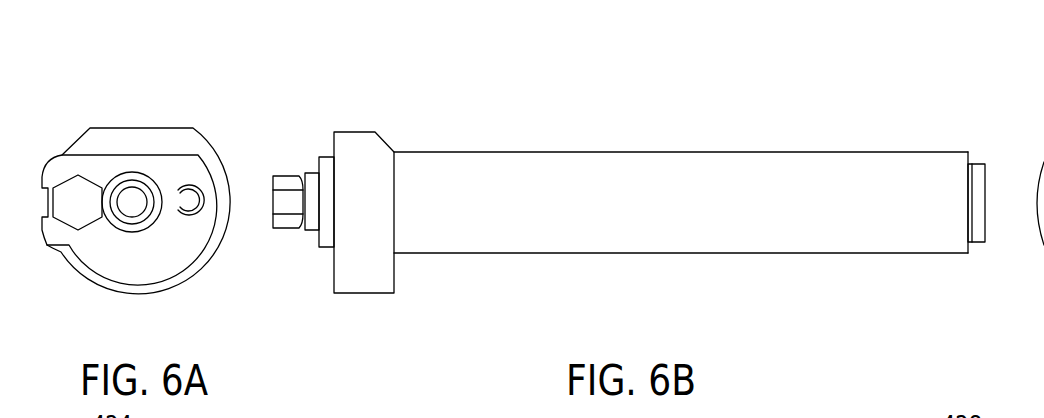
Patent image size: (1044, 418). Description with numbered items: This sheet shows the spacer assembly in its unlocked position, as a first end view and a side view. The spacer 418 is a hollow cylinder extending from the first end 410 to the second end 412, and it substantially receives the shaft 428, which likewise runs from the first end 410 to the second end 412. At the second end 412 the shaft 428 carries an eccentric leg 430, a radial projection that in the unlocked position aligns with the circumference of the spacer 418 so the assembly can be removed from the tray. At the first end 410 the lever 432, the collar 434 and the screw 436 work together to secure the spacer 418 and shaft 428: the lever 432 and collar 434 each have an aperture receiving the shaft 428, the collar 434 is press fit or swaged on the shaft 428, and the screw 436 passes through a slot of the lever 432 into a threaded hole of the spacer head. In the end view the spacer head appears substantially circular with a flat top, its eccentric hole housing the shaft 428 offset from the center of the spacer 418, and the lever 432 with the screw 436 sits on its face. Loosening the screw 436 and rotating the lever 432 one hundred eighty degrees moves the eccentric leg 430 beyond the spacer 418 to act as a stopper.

In FIG. 6B, the first end 410 is at (334, 152).
In FIG. 6B, the second end 412 is at (968, 255).
In FIG. 6B, the spacer 418 is at (717, 227).
In FIG. 6A, the shaft 428 is at (138, 195).
In FIG. 6B, the eccentric leg 430 is at (978, 183).
In FIG. 6A, the lever 432 is at (94, 240).
In FIG. 6B, the lever 432 is at (328, 248).
In FIG. 6A, the collar 434 is at (122, 180).
In FIG. 6B, the collar 434 is at (310, 232).
In FIG. 6A, the screw 436 is at (73, 203).
In FIG. 6B, the screw 436 is at (288, 228).